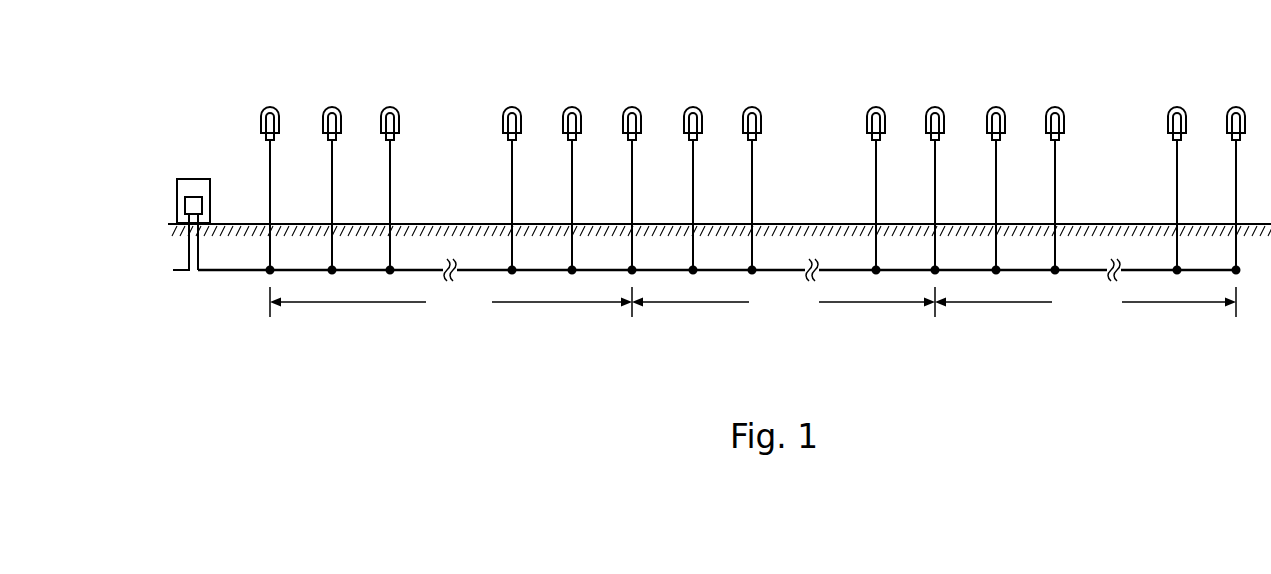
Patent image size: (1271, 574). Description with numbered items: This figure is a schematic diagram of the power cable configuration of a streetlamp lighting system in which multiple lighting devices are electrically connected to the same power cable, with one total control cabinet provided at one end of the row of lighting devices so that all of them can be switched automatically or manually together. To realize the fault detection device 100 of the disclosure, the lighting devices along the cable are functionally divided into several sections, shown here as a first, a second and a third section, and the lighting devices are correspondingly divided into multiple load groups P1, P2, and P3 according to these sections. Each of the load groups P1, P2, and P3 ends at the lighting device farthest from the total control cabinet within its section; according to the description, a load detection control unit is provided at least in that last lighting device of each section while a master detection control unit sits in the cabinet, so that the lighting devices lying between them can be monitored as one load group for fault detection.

The fault detection device 100 is at (170, 76).
The first load group P1 is at (618, 190).
The second load group P2 is at (918, 190).
The third load group P3 is at (1222, 190).